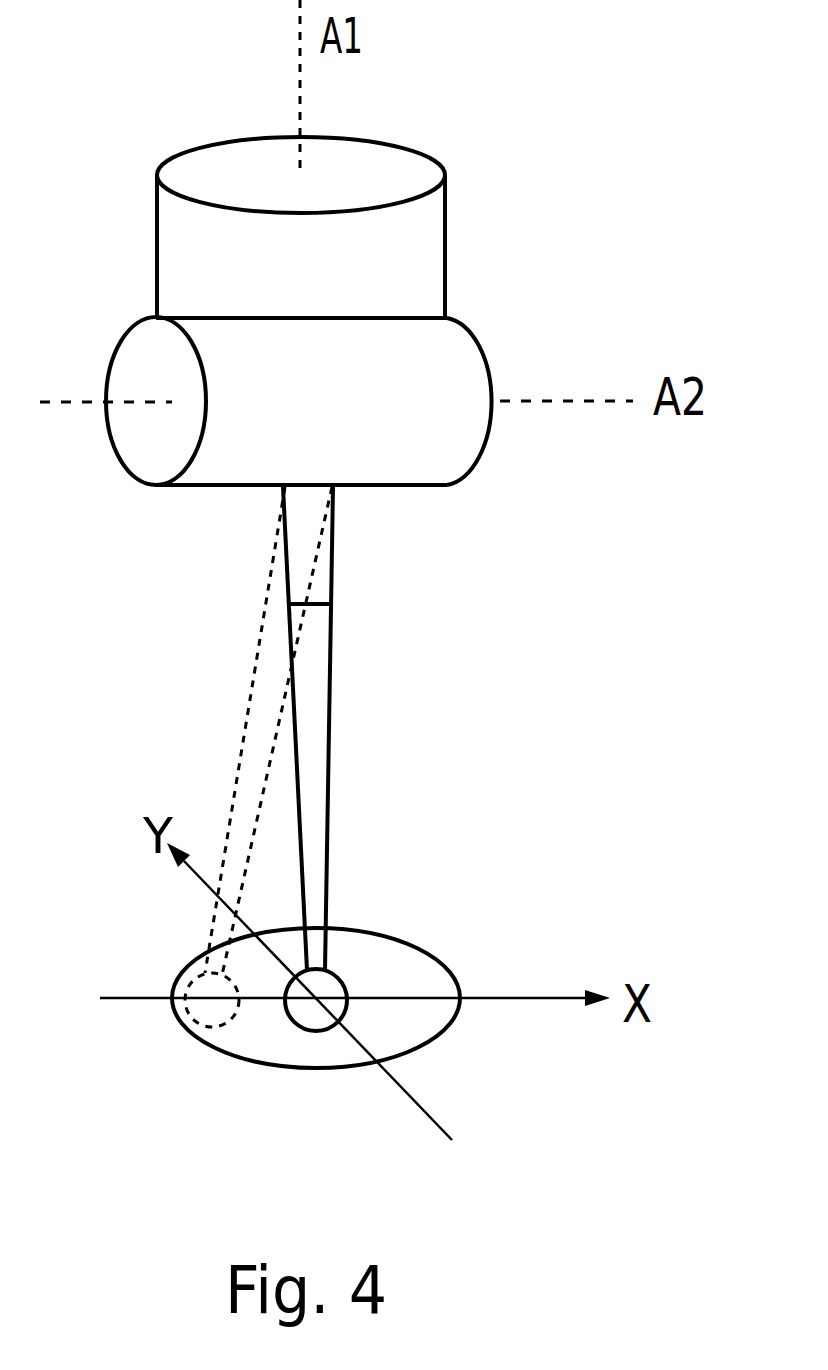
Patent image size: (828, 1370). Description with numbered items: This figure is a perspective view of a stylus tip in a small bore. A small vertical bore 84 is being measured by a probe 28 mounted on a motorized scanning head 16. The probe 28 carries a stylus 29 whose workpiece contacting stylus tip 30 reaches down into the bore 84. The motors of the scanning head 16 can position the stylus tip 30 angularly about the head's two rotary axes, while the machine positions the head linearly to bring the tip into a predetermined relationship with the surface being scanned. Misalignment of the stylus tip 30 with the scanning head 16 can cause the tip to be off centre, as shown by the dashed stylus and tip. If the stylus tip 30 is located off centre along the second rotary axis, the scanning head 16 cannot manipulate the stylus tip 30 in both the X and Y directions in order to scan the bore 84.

The scanning head 16 is at (492, 352).
The probe 28 is at (318, 533).
The stylus 29 is at (318, 713).
The small vertical bore 84 is at (420, 950).
The stylus tip 30 is at (308, 1013).